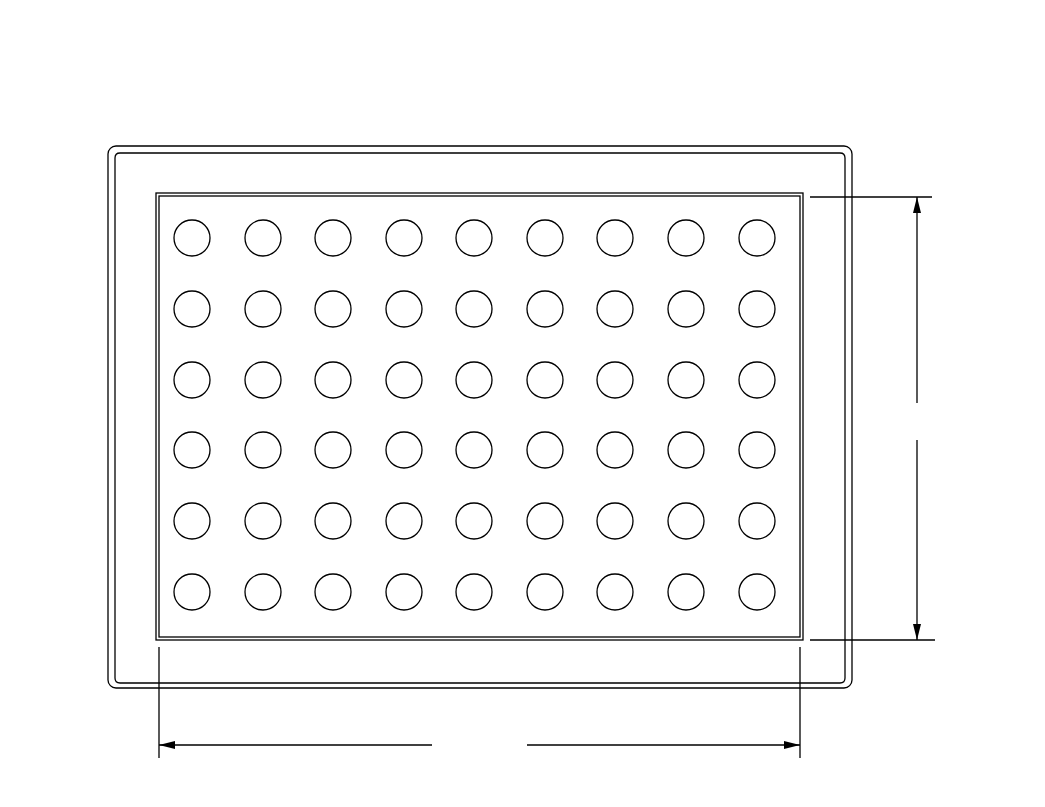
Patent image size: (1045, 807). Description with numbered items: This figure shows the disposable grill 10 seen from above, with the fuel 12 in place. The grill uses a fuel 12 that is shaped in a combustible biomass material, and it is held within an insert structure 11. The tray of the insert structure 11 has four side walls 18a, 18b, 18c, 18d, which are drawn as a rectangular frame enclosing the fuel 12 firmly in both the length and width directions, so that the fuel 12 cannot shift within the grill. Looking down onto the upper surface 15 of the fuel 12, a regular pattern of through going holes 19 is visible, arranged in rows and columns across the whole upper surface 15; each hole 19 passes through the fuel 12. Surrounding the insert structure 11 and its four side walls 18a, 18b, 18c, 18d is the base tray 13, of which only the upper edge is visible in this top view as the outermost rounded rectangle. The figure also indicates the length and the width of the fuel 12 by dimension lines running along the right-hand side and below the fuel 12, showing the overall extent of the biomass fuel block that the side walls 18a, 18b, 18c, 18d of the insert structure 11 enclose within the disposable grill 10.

The disposable grill 10 is at (138, 83).
The insert structure 11 is at (645, 168).
The fuel 12 is at (445, 200).
The base tray 13 is at (848, 150).
The upper surface 15 is at (284, 215).
The side wall 18a is at (143, 307).
The side wall 18b is at (818, 313).
The side wall 18c is at (715, 167).
The side wall 18d is at (730, 672).
The through going holes 19 is at (174, 450).